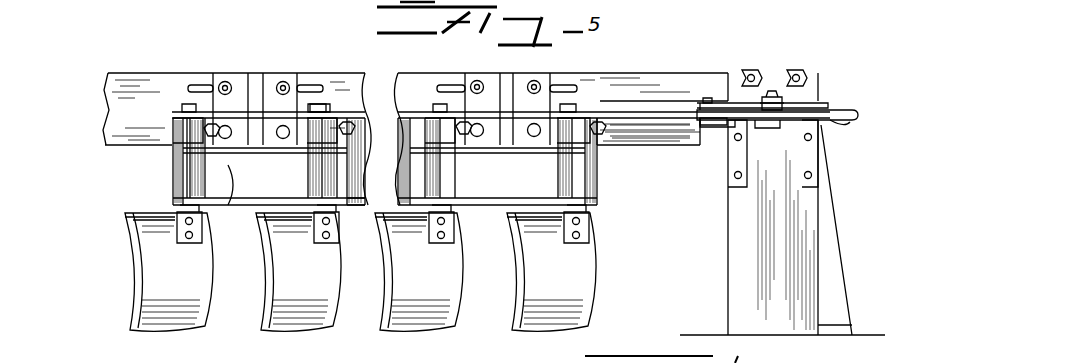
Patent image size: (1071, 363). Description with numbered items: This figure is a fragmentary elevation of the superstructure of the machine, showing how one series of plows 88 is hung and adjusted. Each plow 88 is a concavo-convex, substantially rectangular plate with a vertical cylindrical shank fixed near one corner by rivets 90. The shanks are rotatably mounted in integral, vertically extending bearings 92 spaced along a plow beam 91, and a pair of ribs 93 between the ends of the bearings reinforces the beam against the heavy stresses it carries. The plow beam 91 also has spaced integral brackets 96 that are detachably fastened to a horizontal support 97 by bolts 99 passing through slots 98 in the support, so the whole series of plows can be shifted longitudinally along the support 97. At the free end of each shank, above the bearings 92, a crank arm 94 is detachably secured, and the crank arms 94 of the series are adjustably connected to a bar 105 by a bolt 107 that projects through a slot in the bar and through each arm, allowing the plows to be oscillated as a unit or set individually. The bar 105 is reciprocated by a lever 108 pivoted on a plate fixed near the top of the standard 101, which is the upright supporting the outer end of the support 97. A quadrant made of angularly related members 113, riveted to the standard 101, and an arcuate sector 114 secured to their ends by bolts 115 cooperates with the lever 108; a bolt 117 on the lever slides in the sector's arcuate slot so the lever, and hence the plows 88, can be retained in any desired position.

The plow 88 is at (323, 310).
The rivets 90 is at (578, 233).
The plow beam 91 is at (366, 205).
The bearing 92 is at (626, 160).
The ribs 93 is at (232, 156).
The crank arm 94 is at (712, 125).
The bracket 96 is at (243, 132).
The horizontal support 97 is at (650, 90).
The slot 98 is at (303, 85).
The bolt 99 is at (280, 82).
The standard 101 is at (800, 248).
The bar 105 is at (373, 112).
The bolt 107 is at (322, 106).
The lever 108 is at (788, 110).
The angularly related members 113 is at (722, 125).
The arcuate sector 114 is at (829, 112).
The bolts 115 is at (842, 118).
The bolt 117 is at (772, 95).